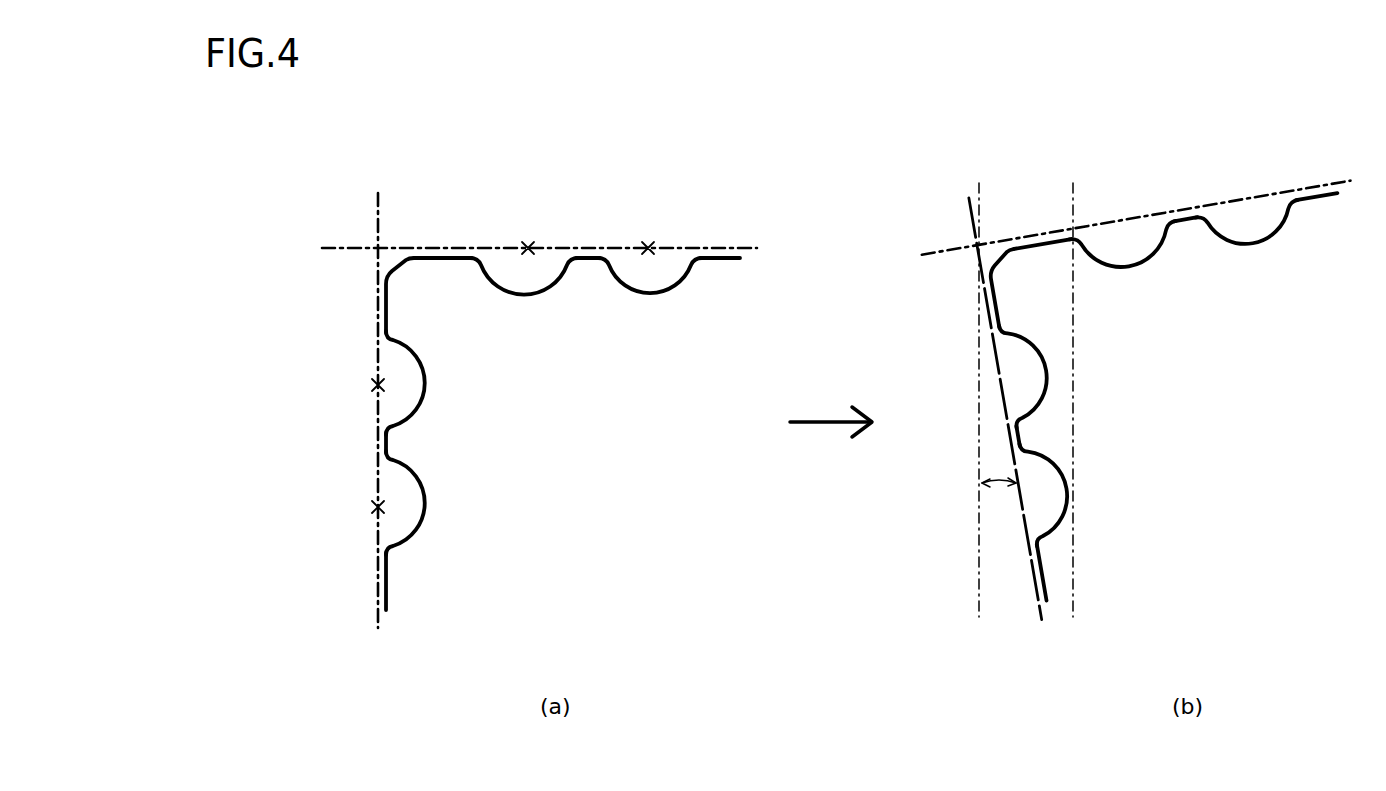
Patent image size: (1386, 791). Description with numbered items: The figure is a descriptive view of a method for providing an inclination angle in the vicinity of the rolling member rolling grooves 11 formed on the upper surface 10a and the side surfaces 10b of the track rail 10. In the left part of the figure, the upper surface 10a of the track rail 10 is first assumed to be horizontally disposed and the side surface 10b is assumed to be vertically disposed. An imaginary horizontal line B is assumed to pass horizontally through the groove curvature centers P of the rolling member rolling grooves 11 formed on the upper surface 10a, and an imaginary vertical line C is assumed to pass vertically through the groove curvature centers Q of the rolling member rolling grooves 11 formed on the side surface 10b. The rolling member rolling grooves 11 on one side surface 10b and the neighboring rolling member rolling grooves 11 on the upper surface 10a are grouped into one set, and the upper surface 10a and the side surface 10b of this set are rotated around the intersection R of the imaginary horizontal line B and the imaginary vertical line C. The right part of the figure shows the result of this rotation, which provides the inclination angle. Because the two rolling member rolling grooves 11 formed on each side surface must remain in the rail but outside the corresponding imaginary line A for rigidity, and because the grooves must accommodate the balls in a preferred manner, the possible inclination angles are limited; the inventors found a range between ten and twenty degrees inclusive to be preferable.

The track rail 10 is at (767, 338).
The upper surface 10a is at (440, 257).
The side surface 10b is at (384, 313).
The rolling member rolling groove 11 is at (638, 293).
The intersection R is at (378, 248).
The groove curvature center P is at (528, 248).
The groove curvature center Q is at (378, 385).
The imaginary line A is at (1075, 207).
The imaginary horizontal line B is at (702, 252).
The imaginary vertical line C is at (378, 542).